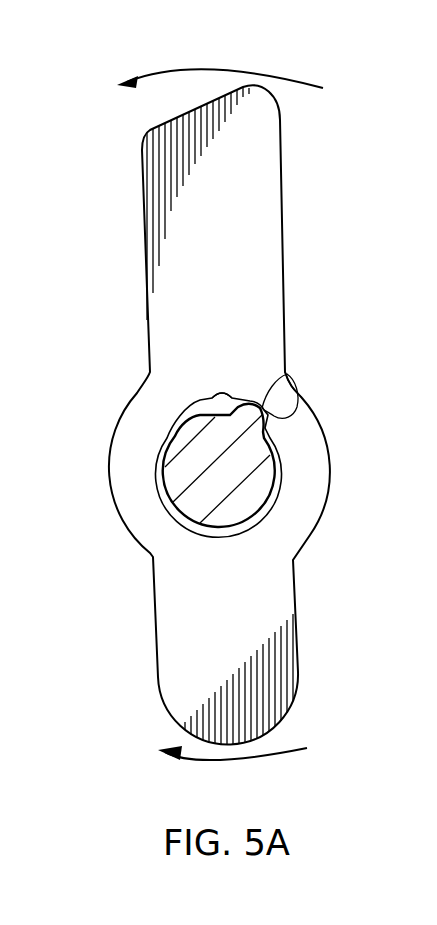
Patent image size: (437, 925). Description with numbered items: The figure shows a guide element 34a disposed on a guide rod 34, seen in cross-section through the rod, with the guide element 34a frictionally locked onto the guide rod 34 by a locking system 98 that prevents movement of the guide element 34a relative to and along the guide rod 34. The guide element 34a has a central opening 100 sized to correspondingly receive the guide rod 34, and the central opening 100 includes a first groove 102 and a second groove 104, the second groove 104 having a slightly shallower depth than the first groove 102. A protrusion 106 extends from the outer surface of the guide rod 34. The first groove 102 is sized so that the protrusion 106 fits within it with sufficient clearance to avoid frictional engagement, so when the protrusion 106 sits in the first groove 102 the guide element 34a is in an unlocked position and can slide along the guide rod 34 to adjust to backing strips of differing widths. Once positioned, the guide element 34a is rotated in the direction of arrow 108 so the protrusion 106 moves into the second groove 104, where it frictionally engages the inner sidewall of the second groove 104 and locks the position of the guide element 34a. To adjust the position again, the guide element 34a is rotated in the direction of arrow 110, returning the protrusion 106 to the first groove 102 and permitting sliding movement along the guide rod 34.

The guide element 34a is at (339, 263).
The guide rod 34 is at (218, 535).
The locking system 98 is at (187, 393).
The central opening 100 is at (154, 462).
The first groove 102 is at (298, 398).
The second groove 104 is at (216, 392).
The protrusion 106 is at (262, 398).
The arrow 108 is at (243, 762).
The arrow 110 is at (230, 70).